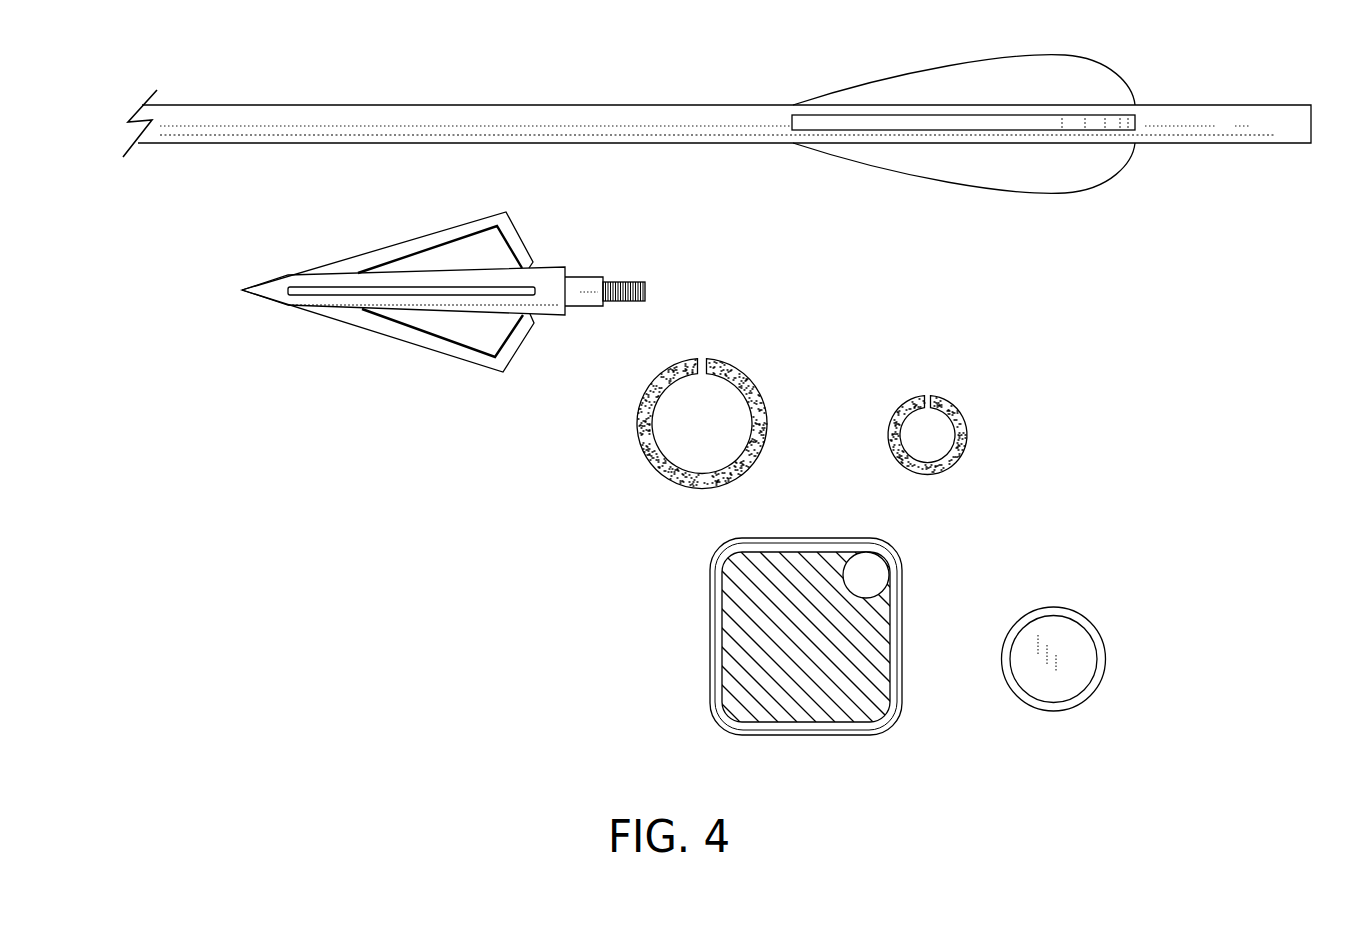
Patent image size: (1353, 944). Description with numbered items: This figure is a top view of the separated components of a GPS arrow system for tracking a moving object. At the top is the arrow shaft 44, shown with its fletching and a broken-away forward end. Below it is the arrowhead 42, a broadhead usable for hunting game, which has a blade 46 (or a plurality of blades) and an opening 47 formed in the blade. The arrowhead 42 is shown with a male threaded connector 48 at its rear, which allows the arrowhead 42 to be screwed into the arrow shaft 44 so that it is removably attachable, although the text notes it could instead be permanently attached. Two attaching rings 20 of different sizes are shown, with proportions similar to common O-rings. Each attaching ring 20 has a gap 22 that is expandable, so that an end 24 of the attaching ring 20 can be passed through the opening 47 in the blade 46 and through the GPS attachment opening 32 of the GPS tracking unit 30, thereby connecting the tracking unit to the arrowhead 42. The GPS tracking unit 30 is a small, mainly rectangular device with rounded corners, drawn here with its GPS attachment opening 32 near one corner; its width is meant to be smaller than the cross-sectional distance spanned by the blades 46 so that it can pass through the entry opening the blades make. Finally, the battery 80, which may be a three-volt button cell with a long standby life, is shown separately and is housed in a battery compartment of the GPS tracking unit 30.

The attaching ring 20 is at (814, 376).
The gap 22 is at (703, 347).
The end 24 is at (687, 350).
The GPS tracking unit 30 is at (797, 626).
The GPS attachment opening 32 is at (870, 572).
The arrowhead 42 is at (463, 286).
The arrow shaft 44 is at (602, 105).
The blade 46 is at (493, 213).
The opening 47 is at (460, 330).
The threaded connector 48 is at (622, 280).
The battery 80 is at (1072, 637).